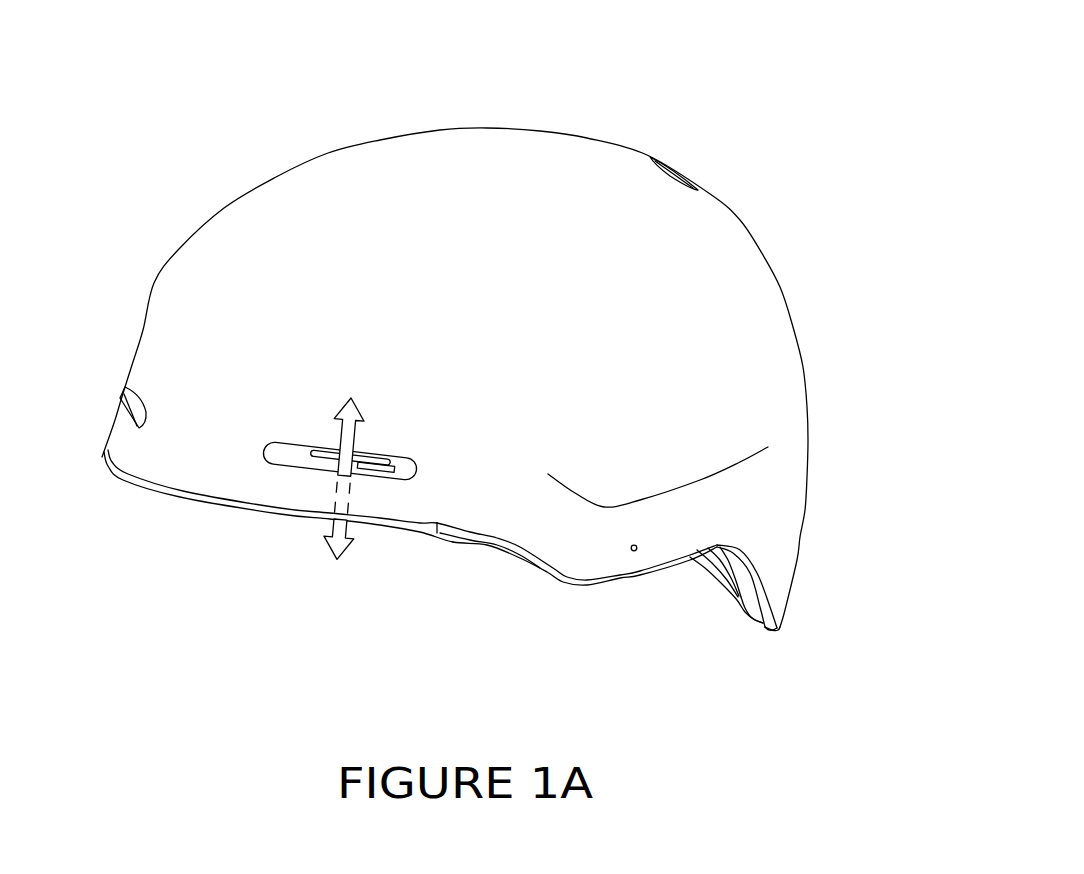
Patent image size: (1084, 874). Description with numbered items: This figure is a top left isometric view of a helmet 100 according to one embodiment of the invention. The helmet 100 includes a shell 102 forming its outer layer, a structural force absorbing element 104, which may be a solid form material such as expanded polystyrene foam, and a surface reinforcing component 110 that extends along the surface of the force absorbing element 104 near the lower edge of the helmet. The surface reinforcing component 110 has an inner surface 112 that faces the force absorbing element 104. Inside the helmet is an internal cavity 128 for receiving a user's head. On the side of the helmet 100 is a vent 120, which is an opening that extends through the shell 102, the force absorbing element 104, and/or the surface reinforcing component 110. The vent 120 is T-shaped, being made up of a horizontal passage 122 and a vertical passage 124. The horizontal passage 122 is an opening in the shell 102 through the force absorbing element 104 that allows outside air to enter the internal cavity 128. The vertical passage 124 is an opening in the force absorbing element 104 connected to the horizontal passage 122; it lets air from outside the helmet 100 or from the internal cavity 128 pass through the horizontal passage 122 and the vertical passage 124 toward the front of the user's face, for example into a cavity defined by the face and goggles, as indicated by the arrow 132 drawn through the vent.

The helmet 100 is at (435, 350).
The shell 102 is at (719, 197).
The force absorbing element 104 is at (746, 609).
The surface reinforcing component 110 is at (201, 503).
The inner surface 112 is at (124, 472).
The vent 120 is at (311, 430).
The horizontal passage 122 is at (264, 454).
The vertical passage 124 is at (402, 452).
The internal cavity 128 is at (631, 612).
The arrow 132 is at (353, 400).